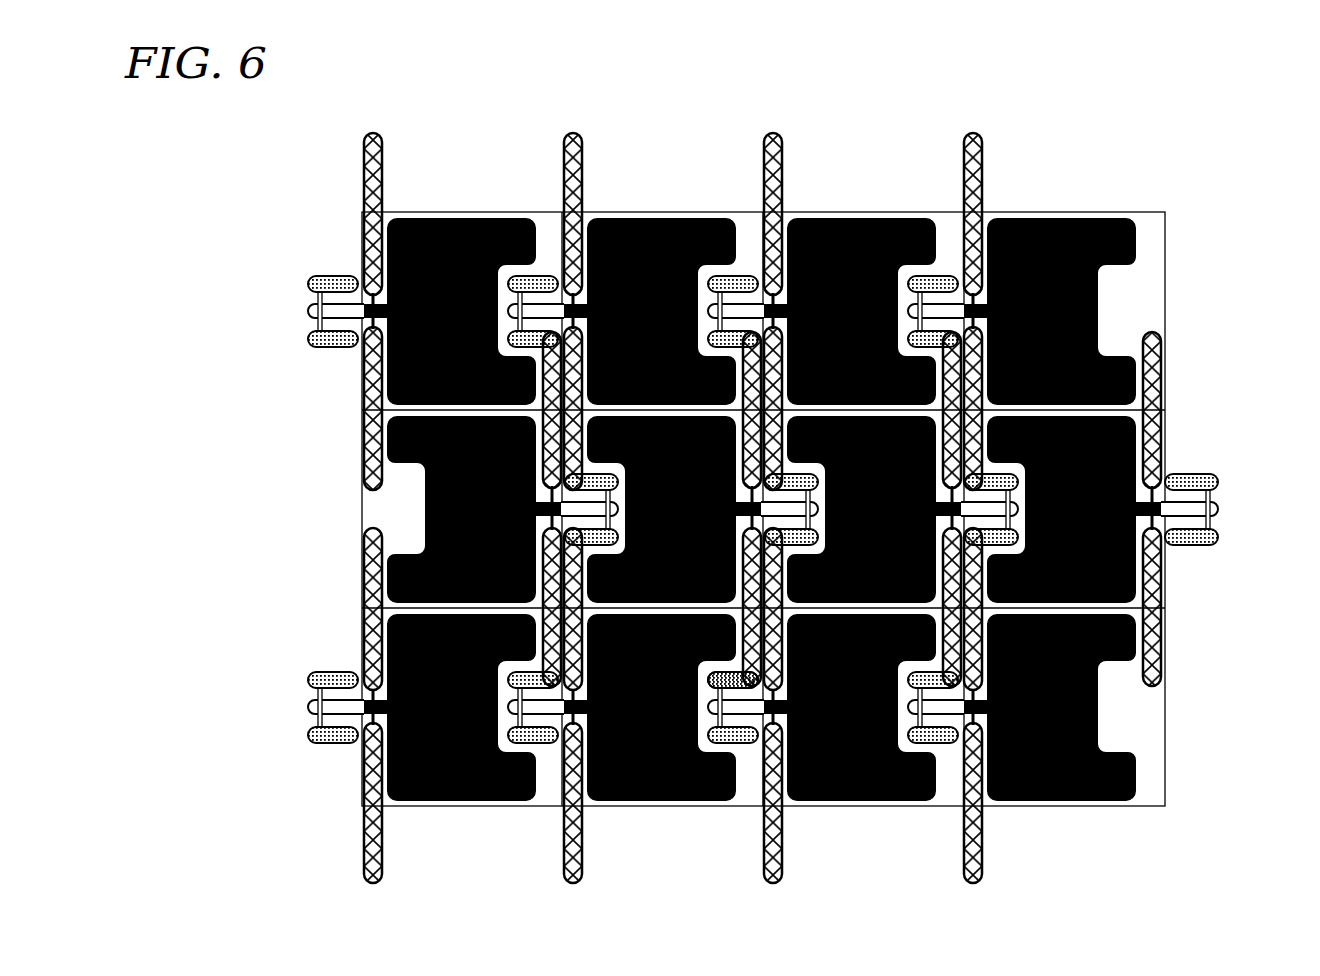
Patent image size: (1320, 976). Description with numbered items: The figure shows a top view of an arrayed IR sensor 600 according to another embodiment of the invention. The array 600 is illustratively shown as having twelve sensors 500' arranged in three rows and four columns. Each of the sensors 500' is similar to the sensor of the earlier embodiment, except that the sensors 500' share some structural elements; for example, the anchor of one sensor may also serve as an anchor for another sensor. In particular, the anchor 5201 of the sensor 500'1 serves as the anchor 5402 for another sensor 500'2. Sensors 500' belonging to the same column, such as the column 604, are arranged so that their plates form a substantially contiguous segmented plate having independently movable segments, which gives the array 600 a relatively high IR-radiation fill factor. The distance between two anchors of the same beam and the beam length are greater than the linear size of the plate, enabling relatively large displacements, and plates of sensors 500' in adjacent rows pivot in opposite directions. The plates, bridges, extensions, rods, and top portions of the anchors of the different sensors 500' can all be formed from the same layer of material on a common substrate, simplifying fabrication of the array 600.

The arrayed IR sensor 600 is at (215, 123).
The column 604 is at (1068, 149).
The sensor 500' is at (764, 526).
The sensor 500'1 is at (661, 509).
The sensor 500'2 is at (861, 767).
The anchor 5201 is at (745, 671).
The anchor 5402 is at (710, 680).